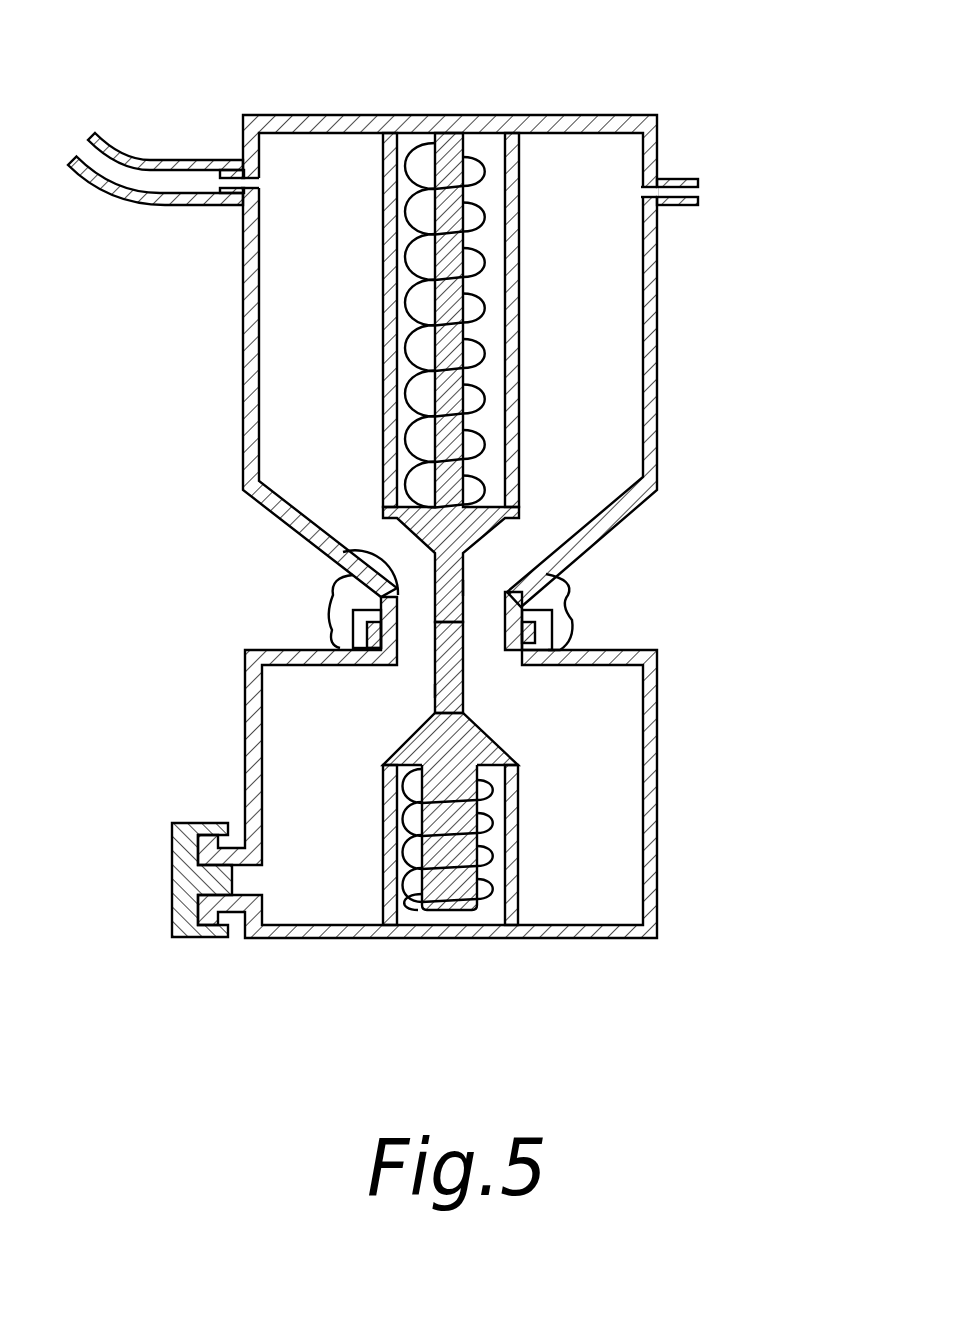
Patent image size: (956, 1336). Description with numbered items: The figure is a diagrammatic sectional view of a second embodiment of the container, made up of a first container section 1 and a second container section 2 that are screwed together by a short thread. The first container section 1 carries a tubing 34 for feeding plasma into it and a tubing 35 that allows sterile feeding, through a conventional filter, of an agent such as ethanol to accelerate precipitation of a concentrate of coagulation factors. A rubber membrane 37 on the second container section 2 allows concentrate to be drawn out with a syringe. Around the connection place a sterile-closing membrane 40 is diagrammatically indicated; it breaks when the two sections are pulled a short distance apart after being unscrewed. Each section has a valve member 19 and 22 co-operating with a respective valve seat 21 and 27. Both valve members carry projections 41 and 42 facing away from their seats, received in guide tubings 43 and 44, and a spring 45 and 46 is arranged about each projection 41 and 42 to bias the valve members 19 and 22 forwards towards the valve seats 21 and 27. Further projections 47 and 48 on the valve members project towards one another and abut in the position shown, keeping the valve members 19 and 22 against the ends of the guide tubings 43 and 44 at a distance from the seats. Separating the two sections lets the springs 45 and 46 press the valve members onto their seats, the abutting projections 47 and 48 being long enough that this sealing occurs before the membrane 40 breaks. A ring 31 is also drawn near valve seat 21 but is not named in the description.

The first container section 1 is at (661, 366).
The second container section 2 is at (660, 772).
The valve member 19 is at (470, 748).
The valve seat 21 is at (435, 675).
The valve member 22 is at (465, 540).
The valve seat 27 is at (343, 552).
The ring 31 is at (410, 628).
The tubing 34 is at (123, 180).
The tubing 35 is at (688, 178).
The rubber membrane 37 is at (187, 882).
The sterile-closing membrane 40 is at (572, 610).
The projection 41 is at (430, 913).
The projection 42 is at (500, 253).
The guide tubing 43 is at (517, 853).
The guide tubing 44 is at (523, 250).
The spring 45 is at (493, 893).
The spring 46 is at (407, 135).
The projection 47 is at (433, 690).
The projection 48 is at (463, 587).